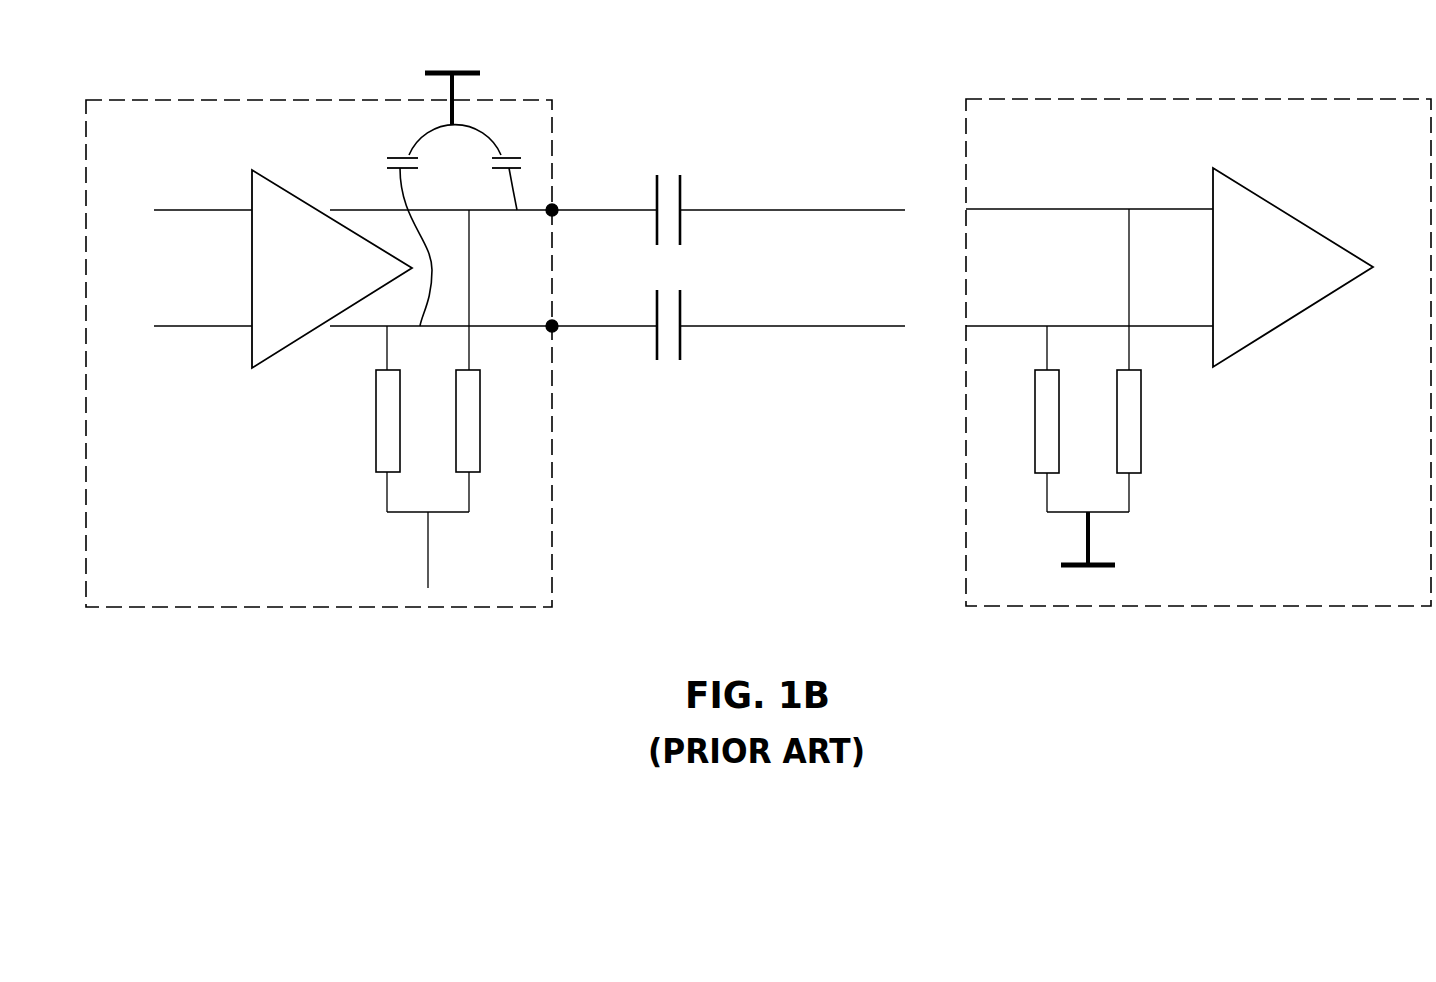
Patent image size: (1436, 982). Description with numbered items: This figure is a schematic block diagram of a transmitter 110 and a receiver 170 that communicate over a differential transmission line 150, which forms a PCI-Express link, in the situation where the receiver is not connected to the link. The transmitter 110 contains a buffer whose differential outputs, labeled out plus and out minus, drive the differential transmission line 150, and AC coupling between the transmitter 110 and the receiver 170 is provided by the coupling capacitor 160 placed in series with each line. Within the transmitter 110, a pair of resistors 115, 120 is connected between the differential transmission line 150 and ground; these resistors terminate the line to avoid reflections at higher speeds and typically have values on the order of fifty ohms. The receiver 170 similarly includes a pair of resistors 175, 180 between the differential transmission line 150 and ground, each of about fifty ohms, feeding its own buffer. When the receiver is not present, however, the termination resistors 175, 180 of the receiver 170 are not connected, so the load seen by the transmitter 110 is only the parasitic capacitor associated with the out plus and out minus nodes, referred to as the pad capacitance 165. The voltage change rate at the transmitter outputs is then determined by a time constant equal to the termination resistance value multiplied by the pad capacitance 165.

The transmitter 110 is at (312, 99).
The resistor 115 is at (376, 448).
The resistor 120 is at (480, 448).
The differential transmission line 150 is at (870, 209).
The coupling capacitor 160 is at (657, 226).
The pad capacitance 165 is at (464, 272).
The receiver 170 is at (1195, 99).
The resistor 175 is at (1035, 448).
The resistor 180 is at (1140, 448).